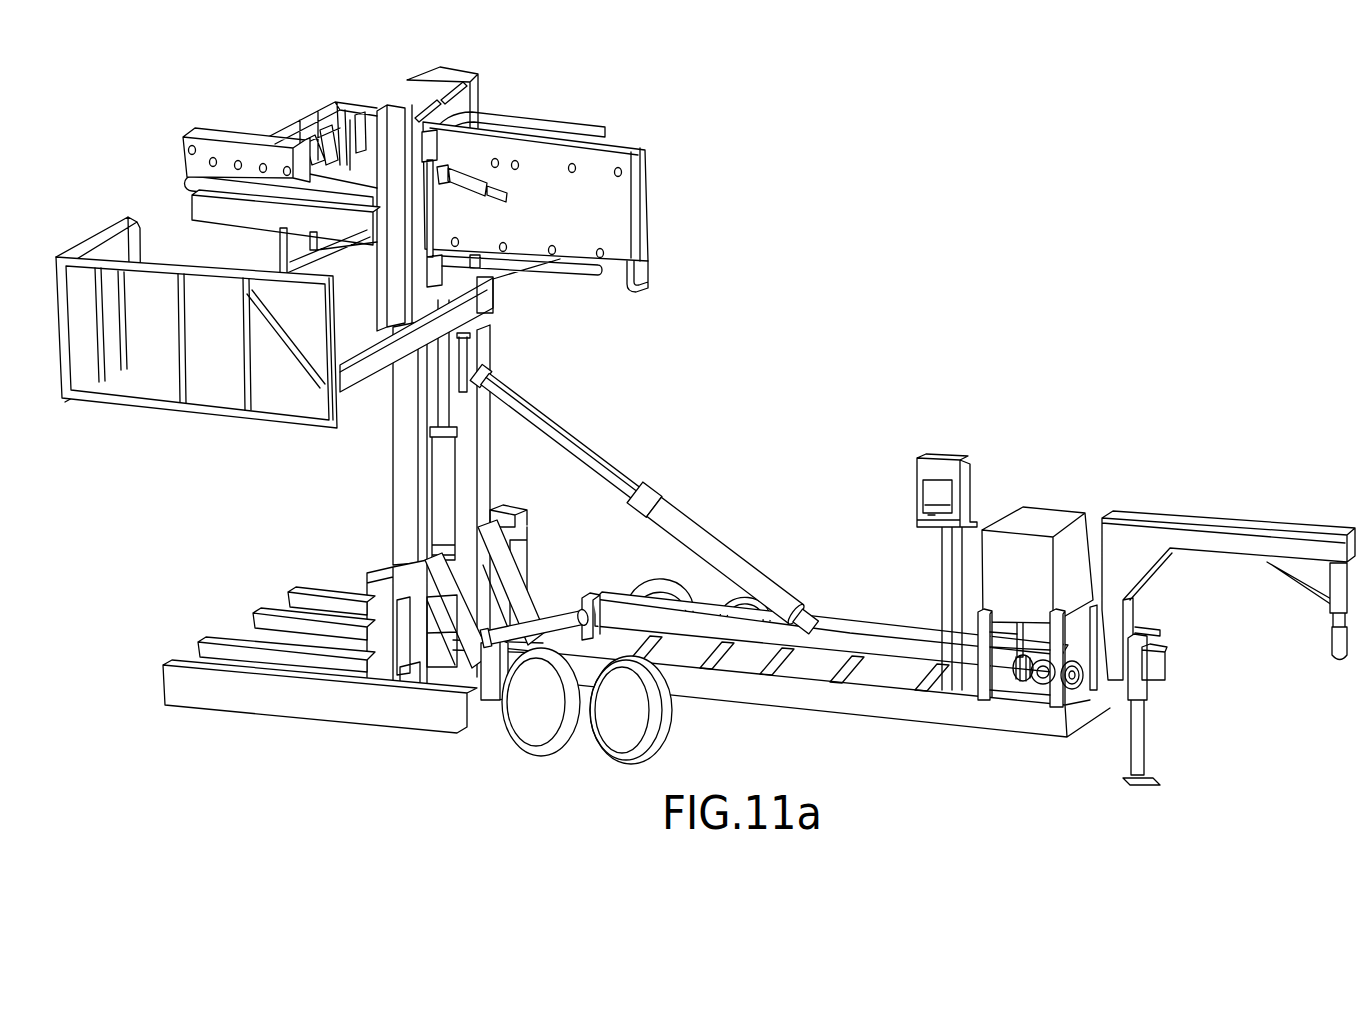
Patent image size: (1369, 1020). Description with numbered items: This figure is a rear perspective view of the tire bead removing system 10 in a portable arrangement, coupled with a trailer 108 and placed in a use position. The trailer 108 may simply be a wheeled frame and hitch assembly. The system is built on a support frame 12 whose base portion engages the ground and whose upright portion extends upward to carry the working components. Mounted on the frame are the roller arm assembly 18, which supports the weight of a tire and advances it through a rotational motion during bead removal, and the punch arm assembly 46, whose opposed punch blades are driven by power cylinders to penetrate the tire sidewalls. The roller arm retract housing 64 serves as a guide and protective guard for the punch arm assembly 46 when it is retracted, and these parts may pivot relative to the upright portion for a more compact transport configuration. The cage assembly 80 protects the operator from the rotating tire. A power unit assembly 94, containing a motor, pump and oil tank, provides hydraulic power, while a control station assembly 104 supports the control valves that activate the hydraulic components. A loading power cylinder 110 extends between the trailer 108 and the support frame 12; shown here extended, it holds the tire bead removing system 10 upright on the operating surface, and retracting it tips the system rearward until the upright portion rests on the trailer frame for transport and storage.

The tire bead removing system 10 is at (705, 447).
The support frame 12 is at (385, 510).
The roller arm assembly 18 is at (226, 222).
The punch arm assembly 46 is at (228, 133).
The roller arm retract housing 64 is at (670, 205).
The cage assembly 80 is at (152, 448).
The power unit assembly 94 is at (1071, 475).
The control station assembly 104 is at (945, 452).
The trailer 108 is at (889, 746).
The loading power cylinder 110 is at (672, 503).